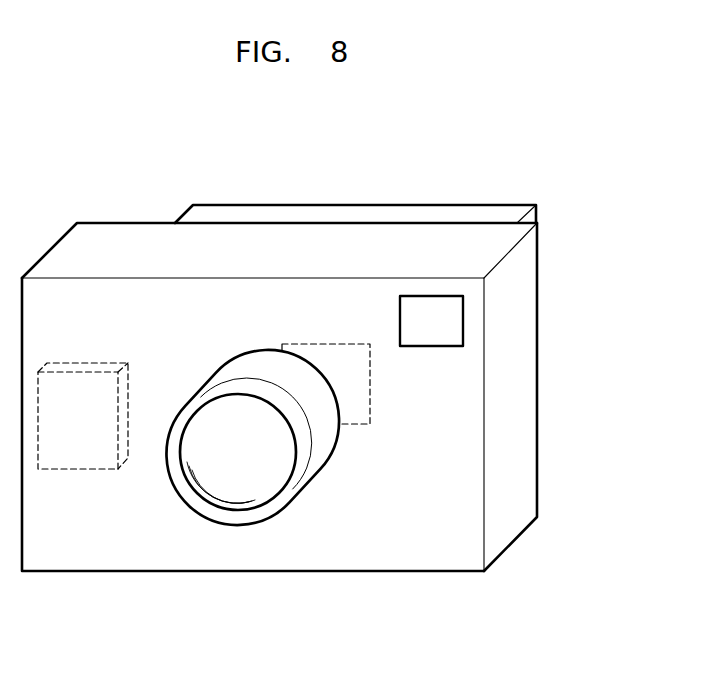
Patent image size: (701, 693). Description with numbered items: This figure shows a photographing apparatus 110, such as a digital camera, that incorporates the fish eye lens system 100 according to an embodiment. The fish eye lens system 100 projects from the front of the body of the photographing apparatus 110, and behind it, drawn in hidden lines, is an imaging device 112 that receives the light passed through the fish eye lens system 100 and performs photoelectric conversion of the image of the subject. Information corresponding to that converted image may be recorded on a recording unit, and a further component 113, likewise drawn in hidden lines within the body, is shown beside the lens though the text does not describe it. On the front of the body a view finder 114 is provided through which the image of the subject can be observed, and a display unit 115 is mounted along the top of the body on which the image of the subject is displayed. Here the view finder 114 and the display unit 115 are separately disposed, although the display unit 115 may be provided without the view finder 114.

The fish eye lens system 100 is at (233, 493).
The photographing apparatus 110 is at (433, 558).
The imaging device 112 is at (353, 418).
The battery unit 113 is at (75, 462).
The view finder 114 is at (458, 322).
The display unit 115 is at (362, 210).